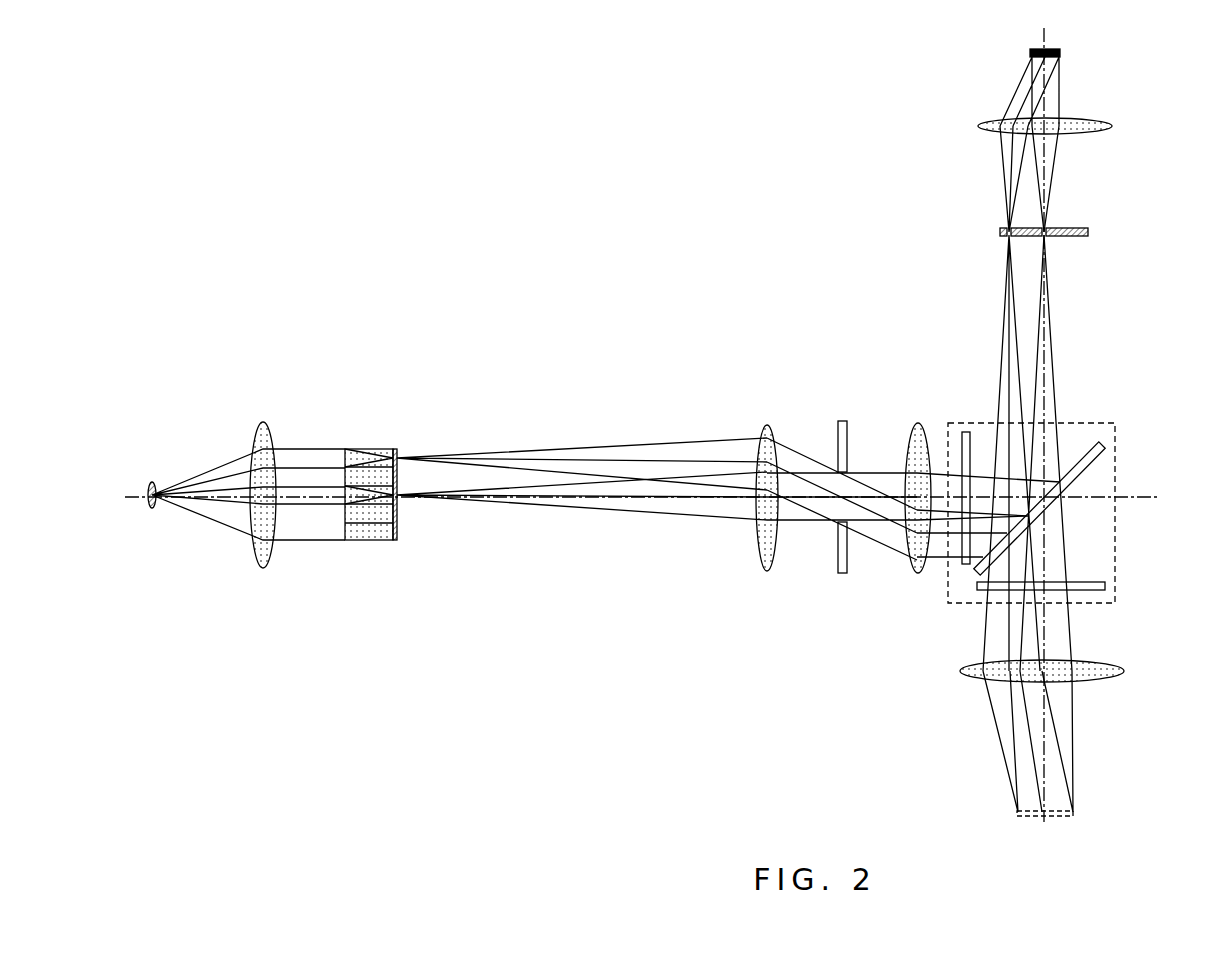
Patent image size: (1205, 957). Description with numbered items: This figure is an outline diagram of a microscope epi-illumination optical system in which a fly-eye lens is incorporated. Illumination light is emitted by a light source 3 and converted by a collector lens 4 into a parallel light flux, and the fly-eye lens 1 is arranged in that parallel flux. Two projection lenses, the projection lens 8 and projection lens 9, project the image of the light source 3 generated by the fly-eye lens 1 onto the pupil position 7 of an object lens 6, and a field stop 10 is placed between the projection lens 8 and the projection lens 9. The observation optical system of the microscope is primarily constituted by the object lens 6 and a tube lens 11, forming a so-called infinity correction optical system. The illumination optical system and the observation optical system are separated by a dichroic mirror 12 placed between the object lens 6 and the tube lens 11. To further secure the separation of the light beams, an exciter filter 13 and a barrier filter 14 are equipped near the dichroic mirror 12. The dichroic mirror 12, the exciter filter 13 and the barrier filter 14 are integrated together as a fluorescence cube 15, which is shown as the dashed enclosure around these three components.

The fly-eye lens 1 is at (373, 446).
The light source 3 is at (153, 480).
The collector lens 4 is at (270, 430).
The object lens 6 is at (1100, 120).
The pupil position 7 is at (1088, 230).
The projection lens 8 is at (760, 572).
The projection lens 9 is at (916, 576).
The field stop 10 is at (840, 423).
The tube lens 11 is at (1116, 662).
The dichroic mirror 12 is at (1104, 443).
The exciter filter 13 is at (963, 430).
The barrier filter 14 is at (1108, 582).
The fluorescence cube 15 is at (1118, 470).